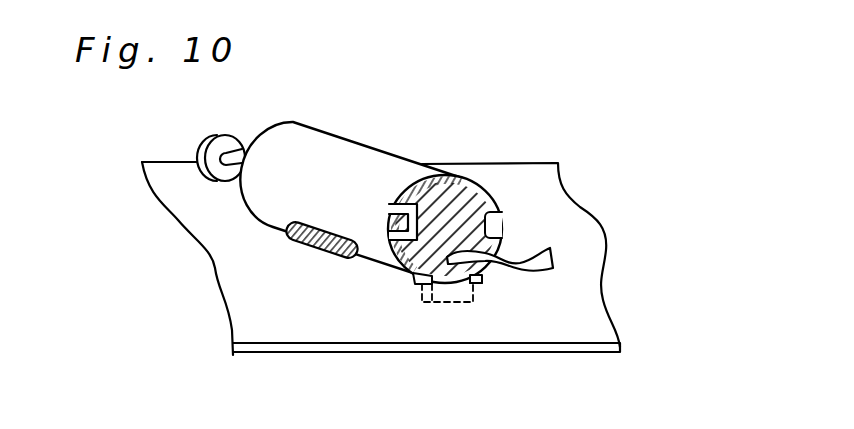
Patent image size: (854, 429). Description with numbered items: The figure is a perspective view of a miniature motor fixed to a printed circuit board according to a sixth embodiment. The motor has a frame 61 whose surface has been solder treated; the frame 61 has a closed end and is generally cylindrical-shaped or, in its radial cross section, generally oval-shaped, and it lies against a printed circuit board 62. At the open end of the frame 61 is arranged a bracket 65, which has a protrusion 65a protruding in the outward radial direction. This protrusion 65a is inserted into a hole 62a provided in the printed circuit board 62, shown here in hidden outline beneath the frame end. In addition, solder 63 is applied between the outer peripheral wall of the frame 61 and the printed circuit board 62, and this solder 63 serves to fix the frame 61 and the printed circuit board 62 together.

The frame 61 is at (348, 147).
The printed circuit board 62 is at (527, 184).
The hole 62a is at (466, 284).
The solder 63 is at (297, 236).
The bracket 65 is at (470, 230).
The protrusion 65a is at (470, 290).